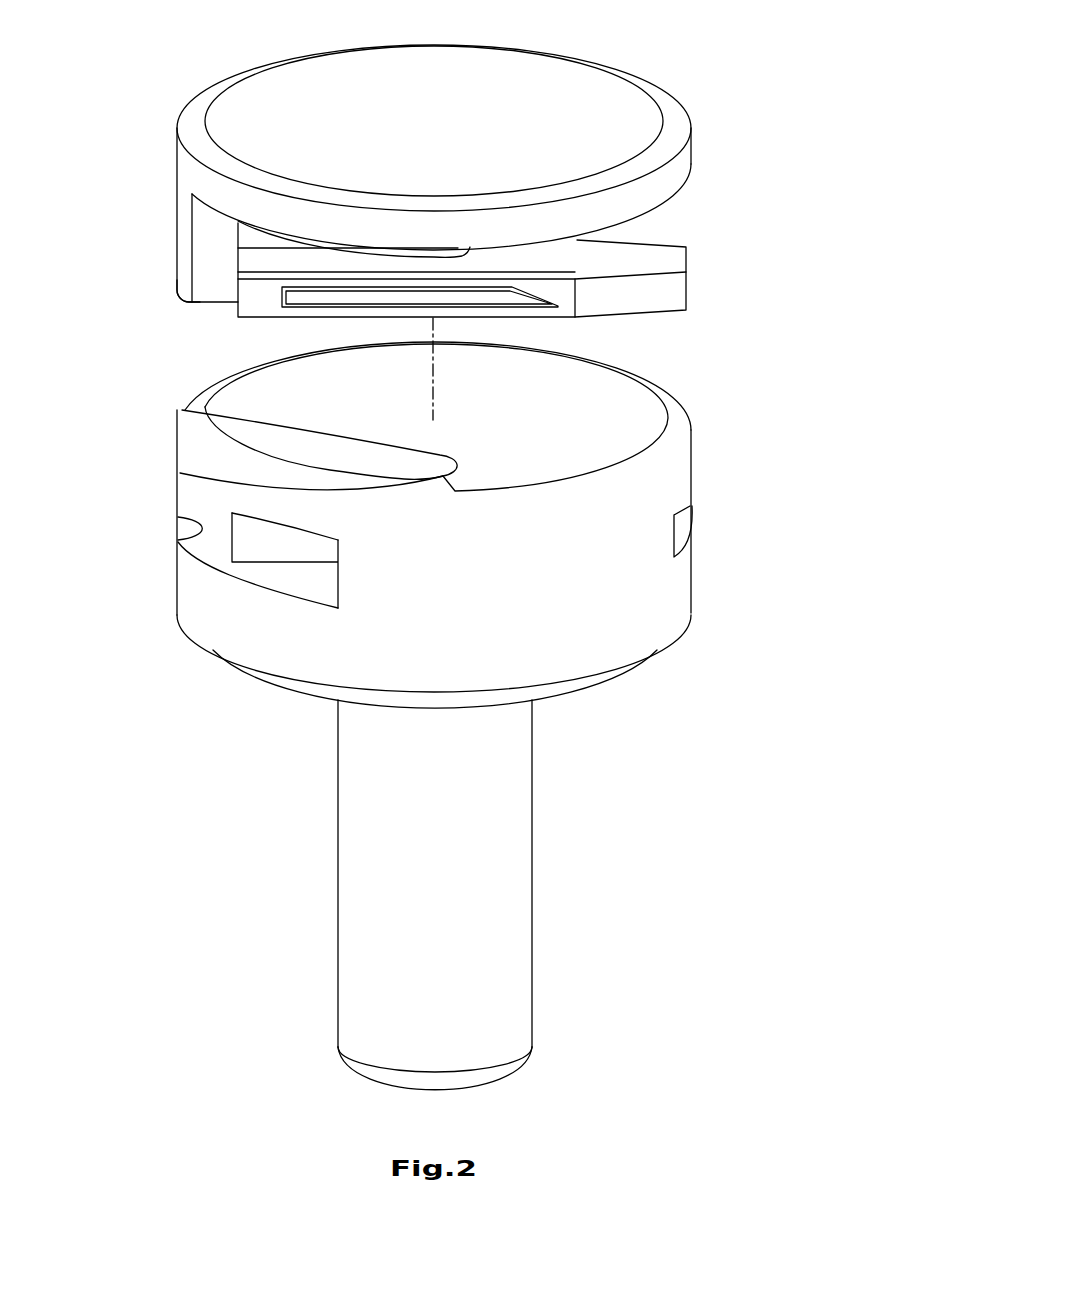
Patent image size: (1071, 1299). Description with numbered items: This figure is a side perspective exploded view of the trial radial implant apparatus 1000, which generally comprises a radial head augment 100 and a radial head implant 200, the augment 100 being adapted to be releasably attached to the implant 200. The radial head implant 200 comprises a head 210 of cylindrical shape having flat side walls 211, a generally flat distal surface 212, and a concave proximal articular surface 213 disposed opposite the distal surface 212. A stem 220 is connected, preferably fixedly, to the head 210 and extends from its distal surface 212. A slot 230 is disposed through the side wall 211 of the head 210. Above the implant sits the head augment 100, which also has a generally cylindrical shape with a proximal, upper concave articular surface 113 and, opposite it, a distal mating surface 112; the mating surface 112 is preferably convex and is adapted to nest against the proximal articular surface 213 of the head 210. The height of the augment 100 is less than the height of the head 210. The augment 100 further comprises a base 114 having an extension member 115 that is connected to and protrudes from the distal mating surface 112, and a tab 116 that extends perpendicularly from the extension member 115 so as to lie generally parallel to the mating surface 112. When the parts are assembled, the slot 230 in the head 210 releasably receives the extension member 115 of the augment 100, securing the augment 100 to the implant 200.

The radial head augment 100 is at (92, 140).
The distal mating surface 112 is at (668, 202).
The proximal articular surface 113 is at (572, 110).
The base 114 is at (148, 246).
The extension member 115 is at (175, 273).
The tab 116 is at (688, 280).
The trial radial implant apparatus 1000 is at (806, 380).
The radial head implant 200 is at (214, 810).
The head 210 is at (748, 624).
The side wall 211 is at (692, 565).
The distal surface 212 is at (625, 675).
The proximal articular surface 213 is at (622, 397).
The stem 220 is at (535, 893).
The slot 230 is at (178, 513).